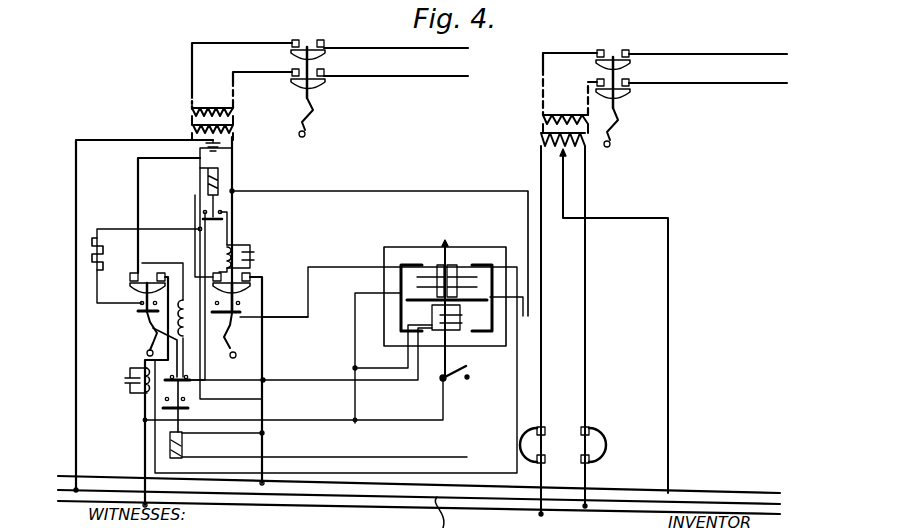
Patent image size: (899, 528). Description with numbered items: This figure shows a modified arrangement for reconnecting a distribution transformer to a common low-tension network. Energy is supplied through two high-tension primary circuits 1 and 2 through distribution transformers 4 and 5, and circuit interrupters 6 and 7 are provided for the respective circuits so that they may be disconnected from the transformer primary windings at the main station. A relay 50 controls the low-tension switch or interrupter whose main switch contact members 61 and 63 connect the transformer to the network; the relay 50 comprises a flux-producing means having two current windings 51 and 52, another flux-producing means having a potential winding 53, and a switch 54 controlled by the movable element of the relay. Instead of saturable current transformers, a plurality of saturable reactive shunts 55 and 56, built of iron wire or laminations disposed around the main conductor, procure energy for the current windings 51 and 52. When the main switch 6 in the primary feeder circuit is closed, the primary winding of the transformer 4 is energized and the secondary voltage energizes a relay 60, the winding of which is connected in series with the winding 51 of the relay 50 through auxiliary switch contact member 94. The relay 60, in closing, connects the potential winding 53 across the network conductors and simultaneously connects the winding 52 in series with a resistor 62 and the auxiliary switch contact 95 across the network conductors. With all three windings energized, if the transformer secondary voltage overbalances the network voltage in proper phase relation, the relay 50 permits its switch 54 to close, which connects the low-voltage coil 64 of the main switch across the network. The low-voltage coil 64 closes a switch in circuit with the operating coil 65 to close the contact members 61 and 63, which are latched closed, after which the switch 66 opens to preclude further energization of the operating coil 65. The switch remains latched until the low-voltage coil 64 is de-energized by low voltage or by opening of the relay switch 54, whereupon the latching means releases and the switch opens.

The high-tension primary circuit 1 is at (396, 48).
The high-tension primary circuit 2 is at (717, 56).
The distribution transformer 4 is at (236, 124).
The distribution transformer 5 is at (545, 128).
The circuit interrupter 6 is at (312, 62).
The circuit interrupter 7 is at (618, 72).
The relay 50 is at (500, 316).
The current winding 51 is at (426, 278).
The current winding 52 is at (464, 280).
The potential winding 53 is at (456, 331).
The switch 54 is at (469, 378).
The saturable reactive shunt 55 is at (250, 260).
The saturable reactive shunt 56 is at (137, 391).
The relay 60 is at (219, 178).
The main switch contact member 61 is at (132, 284).
The resistor 62 is at (92, 246).
The main switch contact member 63 is at (238, 379).
The low-voltage coil 64 is at (186, 446).
The operating coil 65 is at (188, 337).
The switch 66 is at (192, 381).
The auxiliary switch contact member 94 is at (240, 318).
The auxiliary switch contact 95 is at (139, 312).